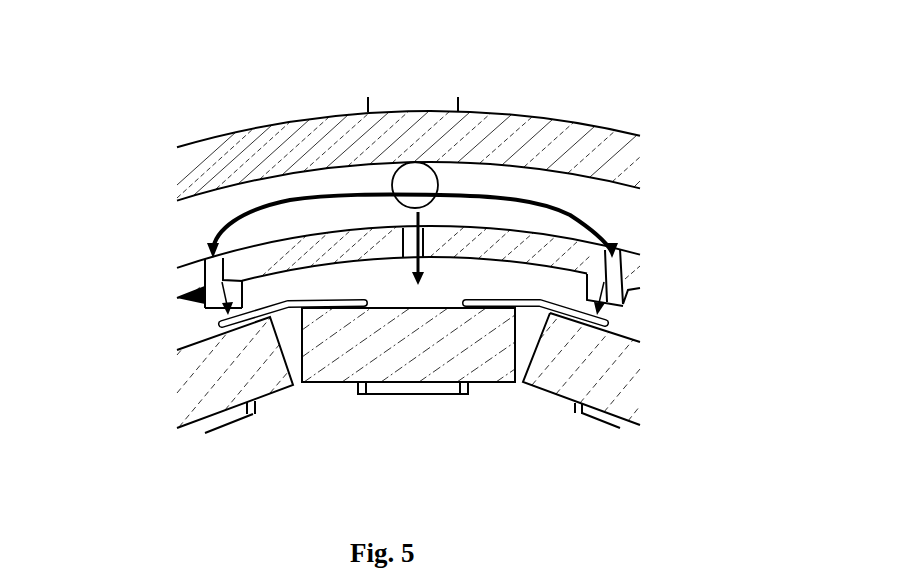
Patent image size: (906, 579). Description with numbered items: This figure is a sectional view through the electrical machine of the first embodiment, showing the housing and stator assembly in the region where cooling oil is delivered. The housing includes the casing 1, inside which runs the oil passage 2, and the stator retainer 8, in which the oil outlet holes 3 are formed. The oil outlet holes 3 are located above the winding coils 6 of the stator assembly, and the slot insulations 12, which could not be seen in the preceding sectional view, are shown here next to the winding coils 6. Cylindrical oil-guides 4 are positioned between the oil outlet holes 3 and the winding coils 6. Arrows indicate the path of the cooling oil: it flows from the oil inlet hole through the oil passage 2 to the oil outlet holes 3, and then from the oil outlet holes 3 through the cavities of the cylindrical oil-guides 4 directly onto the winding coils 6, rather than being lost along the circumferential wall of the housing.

The casing 1 is at (533, 137).
The oil passage 2 is at (372, 173).
The oil outlet holes 3 is at (410, 237).
The oil-guides 4 is at (190, 300).
The winding coils 6 is at (575, 370).
The stator retainer 8 is at (520, 247).
The slot insulations 12 is at (612, 323).